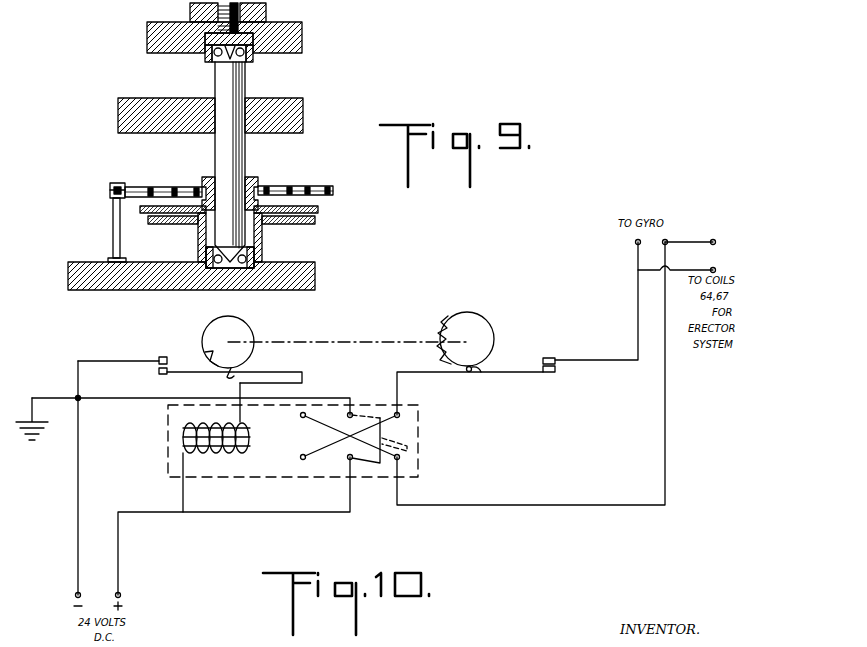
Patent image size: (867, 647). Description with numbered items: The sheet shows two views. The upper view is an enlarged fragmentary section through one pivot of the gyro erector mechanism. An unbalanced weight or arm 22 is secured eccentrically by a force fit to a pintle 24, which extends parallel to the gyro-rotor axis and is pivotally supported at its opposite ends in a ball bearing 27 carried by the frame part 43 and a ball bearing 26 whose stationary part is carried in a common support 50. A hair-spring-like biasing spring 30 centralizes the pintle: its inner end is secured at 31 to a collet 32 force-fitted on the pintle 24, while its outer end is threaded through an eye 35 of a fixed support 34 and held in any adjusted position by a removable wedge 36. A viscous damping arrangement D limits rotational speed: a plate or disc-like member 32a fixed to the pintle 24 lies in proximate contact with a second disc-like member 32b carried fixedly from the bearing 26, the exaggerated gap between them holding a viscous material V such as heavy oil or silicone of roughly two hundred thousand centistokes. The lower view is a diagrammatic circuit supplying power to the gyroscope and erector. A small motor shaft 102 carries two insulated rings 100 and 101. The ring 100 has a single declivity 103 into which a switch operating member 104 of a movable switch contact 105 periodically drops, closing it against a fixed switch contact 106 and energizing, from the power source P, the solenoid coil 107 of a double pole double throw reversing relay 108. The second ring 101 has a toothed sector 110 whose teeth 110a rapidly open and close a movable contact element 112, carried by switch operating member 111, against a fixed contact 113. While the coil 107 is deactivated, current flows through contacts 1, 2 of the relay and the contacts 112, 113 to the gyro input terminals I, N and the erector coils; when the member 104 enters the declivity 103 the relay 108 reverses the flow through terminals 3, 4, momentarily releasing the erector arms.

In FIG. 9, the frame part 43 is at (303, 28).
In FIG. 9, the ball bearing 27 is at (253, 57).
In FIG. 9, the pintle 24 is at (243, 82).
In FIG. 9, the unbalanced weight or arm 22 is at (303, 116).
In FIG. 9, the securing point of spring inner end 31 is at (208, 182).
In FIG. 9, the collet 32 is at (262, 190).
In FIG. 9, the biasing spring 30 is at (333, 192).
In FIG. 9, the removable wedge 36 is at (110, 186).
In FIG. 9, the eye 35 is at (110, 192).
In FIG. 9, the fixed support 34 is at (113, 220).
In FIG. 9, the plate or disc-like member 32a is at (318, 209).
In FIG. 9, the second disc-like member 32b is at (315, 221).
In FIG. 9, the viscous material V is at (318, 212).
In FIG. 9, the damping arrangement D is at (171, 226).
In FIG. 9, the ball bearing 26 is at (262, 258).
In FIG. 9, the common support 50 is at (315, 270).
In FIG. 10, the insulated ring 100 is at (250, 330).
In FIG. 10, the second insulated ring 101 is at (480, 318).
In FIG. 10, the motor shaft 102 is at (338, 340).
In FIG. 10, the declivity 103 is at (206, 348).
In FIG. 10, the switch operating member 104 is at (238, 371).
In FIG. 10, the movable switch contact 105 is at (159, 372).
In FIG. 10, the fixed switch contact 106 is at (160, 357).
In FIG. 10, the solenoid coil 107 is at (186, 455).
In FIG. 10, the reversing relay 108 is at (276, 480).
In FIG. 10, the toothed sector 110 is at (450, 331).
In FIG. 10, the teeth 110a is at (441, 322).
In FIG. 10, the switch operating member 111 is at (472, 374).
In FIG. 10, the movable contact element 112 is at (550, 373).
In FIG. 10, the fixed contact 113 is at (553, 358).
In FIG. 10, the relay contact 1 is at (400, 414).
In FIG. 10, the relay contact 2 is at (400, 457).
In FIG. 10, the relay terminal 3 is at (300, 415).
In FIG. 10, the relay terminal 4 is at (300, 457).
In FIG. 10, the power source P is at (100, 579).
In FIG. 10, the input terminal I is at (635, 242).
In FIG. 10, the input terminal N is at (667, 241).